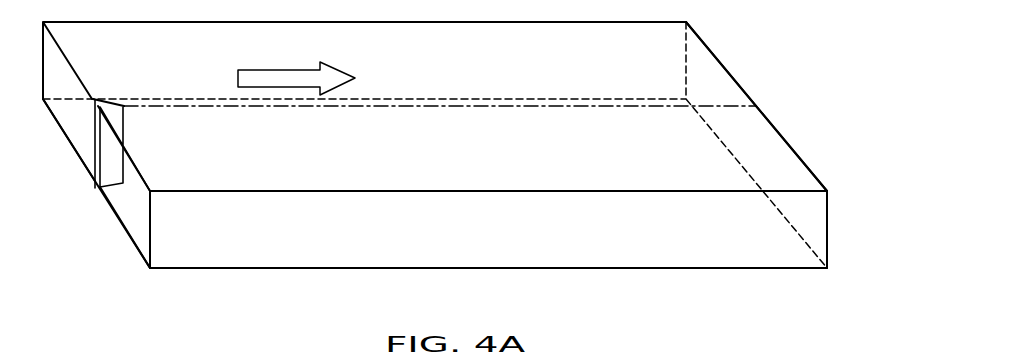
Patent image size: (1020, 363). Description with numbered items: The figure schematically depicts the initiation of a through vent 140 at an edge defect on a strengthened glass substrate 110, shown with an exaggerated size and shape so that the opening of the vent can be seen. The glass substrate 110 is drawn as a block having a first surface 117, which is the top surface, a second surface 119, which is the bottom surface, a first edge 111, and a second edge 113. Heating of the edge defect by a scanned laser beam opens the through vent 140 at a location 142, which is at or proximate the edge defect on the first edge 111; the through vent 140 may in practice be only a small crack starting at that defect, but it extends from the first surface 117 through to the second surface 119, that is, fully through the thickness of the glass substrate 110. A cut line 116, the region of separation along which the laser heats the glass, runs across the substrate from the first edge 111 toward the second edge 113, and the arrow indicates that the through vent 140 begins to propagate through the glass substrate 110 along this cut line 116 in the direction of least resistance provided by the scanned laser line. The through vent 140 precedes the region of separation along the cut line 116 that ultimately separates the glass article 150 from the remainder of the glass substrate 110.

The glass substrate 110 is at (841, 246).
The first edge 111 is at (137, 223).
The second edge 113 is at (784, 141).
The cut line 116 is at (382, 107).
The first surface 117 is at (630, 170).
The second surface 119 is at (280, 268).
The through vent 140 is at (271, 69).
The location 142 is at (113, 103).
The glass article 150 is at (753, 124).